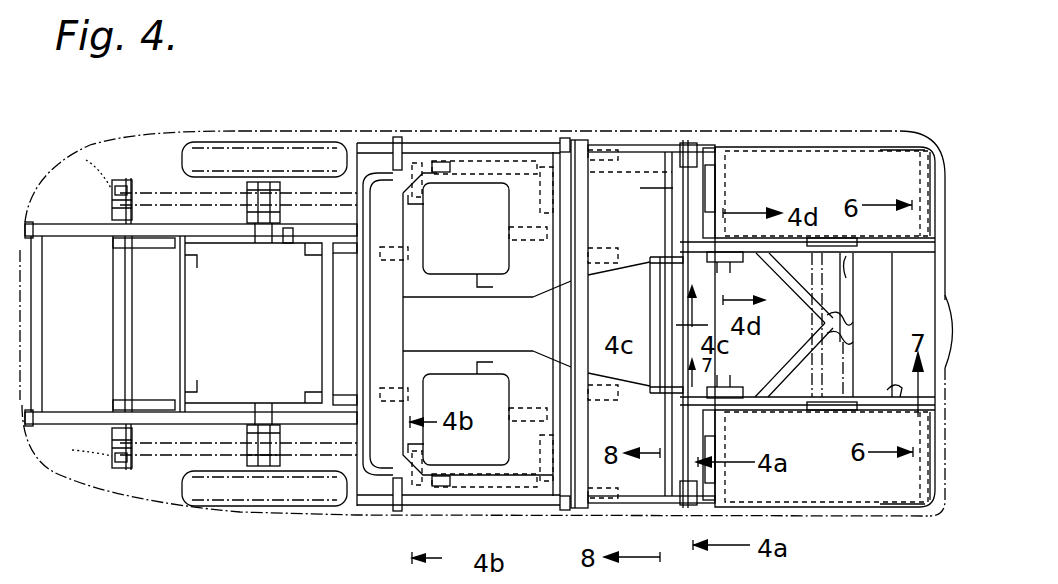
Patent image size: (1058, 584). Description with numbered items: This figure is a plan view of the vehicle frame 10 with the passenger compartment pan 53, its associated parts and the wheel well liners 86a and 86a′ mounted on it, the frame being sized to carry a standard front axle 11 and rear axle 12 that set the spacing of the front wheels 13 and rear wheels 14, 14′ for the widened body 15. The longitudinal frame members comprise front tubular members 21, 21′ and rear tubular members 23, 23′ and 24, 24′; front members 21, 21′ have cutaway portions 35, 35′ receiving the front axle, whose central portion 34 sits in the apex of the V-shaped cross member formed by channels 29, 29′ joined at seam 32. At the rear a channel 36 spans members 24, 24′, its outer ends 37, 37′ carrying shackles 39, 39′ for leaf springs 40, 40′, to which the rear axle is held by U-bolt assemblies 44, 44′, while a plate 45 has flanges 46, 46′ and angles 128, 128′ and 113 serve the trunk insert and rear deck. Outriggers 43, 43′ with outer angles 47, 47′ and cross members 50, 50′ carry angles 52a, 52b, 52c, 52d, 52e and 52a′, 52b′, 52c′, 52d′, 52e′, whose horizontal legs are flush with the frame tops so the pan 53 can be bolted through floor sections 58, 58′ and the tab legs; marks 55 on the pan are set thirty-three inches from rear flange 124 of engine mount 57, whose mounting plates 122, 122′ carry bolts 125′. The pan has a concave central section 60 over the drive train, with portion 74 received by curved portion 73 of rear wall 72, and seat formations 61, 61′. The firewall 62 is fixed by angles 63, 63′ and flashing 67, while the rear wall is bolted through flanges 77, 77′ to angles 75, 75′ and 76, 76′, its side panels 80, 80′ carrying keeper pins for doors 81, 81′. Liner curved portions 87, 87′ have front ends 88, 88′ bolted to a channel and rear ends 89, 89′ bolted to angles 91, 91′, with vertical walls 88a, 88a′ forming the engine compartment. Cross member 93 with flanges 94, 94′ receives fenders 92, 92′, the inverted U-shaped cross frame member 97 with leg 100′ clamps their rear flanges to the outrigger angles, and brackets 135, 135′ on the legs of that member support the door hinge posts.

The vehicle frame 10 is at (66, 205).
The front axle 11 is at (846, 272).
The rear axle 12 is at (247, 216).
The front wheels 13 is at (928, 507).
The rear wheel 14′ is at (200, 142).
The rear wheel 14 is at (200, 506).
The vehicle body 15 is at (257, 131).
The front frame tubular member 21′ is at (832, 238).
The front frame tubular member 21 is at (820, 410).
The rear frame tubular member 23′ is at (305, 255).
The rear frame tubular member 23 is at (305, 392).
The rear frame tubular member 24′ is at (255, 243).
The rear frame tubular member 24 is at (247, 415).
The channel 29′ is at (800, 292).
The channel 29 is at (790, 376).
The seam 32 is at (853, 322).
The central axle portion 34 is at (848, 358).
The cutaway portion 35′ is at (843, 238).
The cutaway portion 35 is at (835, 410).
The channel 36 is at (113, 302).
The outer end of channel 37′ is at (126, 185).
The outer end of channel 37 is at (126, 468).
The shackle 39′ is at (89, 159).
The shackle 39 is at (76, 448).
The leaf spring 40′ is at (148, 215).
The leaf spring 40 is at (165, 450).
The outrigger portion 43′ is at (360, 142).
The outrigger portion 43 is at (360, 506).
The U-bolt assembly 44′ is at (285, 243).
The U-bolt assembly 44 is at (270, 425).
The plate 45 is at (262, 336).
The flange 46′ is at (197, 262).
The flange 46 is at (197, 392).
The outer angle 47′ is at (430, 173).
The outer angle 47 is at (430, 475).
The outrigger cross frame member 50′ is at (690, 143).
The outrigger cross frame member 50 is at (690, 505).
The angle 52a′ is at (508, 240).
The angle 52a is at (508, 410).
The angle 52b′ is at (540, 192).
The angle 52b is at (540, 458).
The angle 52c′ is at (606, 248).
The angle 52c is at (606, 400).
The angle 52d′ is at (487, 161).
The angle 52d is at (512, 487).
The angle 52e′ is at (606, 150).
The angle 52e is at (606, 498).
The passenger compartment pan 53 is at (553, 266).
The marks 55 is at (553, 392).
The engine mount 57 is at (730, 380).
The floor section 58′ is at (345, 256).
The floor section 58 is at (345, 395).
The concave central section 60 is at (640, 325).
The box-like formation 61′ is at (478, 288).
The box-like formation 61 is at (476, 362).
The firewall 62 is at (660, 188).
The angle 63′ is at (685, 140).
The angle 63 is at (683, 434).
The flashing 67 is at (638, 270).
The rear wall 72 is at (350, 207).
The central curved portion 73 is at (393, 326).
The portion of concave section 74 is at (423, 280).
The angle 75′ is at (390, 247).
The angle 75 is at (390, 401).
The angle 76′ is at (440, 172).
The angle 76 is at (440, 476).
The flange 77′ is at (420, 220).
The flange 77 is at (420, 410).
The side panel 80′ is at (398, 137).
The side panel 80 is at (397, 511).
The door 81′ is at (485, 173).
The door 81 is at (485, 496).
The wheel well liner 86a′ is at (905, 150).
The wheel well liner 86a is at (905, 507).
The curved planar portion 87′ is at (765, 180).
The curved planar portion 87 is at (825, 507).
The front end of curved portion 88′ is at (930, 165).
The front end of curved portion 88 is at (930, 472).
The vertical wall 88a′ is at (920, 196).
The vertical wall 88a is at (780, 442).
The rear end of curved portion 89′ is at (712, 148).
The rear end of curved portion 89 is at (712, 500).
The angle 91′ is at (715, 187).
The angle 91 is at (715, 447).
The fender 92′ is at (822, 151).
The fender 92 is at (798, 502).
The metal pan or cross member 93 is at (892, 296).
The upstanding flange 94′ is at (898, 255).
The upstanding flange 94 is at (888, 386).
The inverted U-shaped cross frame member 97 is at (588, 317).
The leg of cross frame member 100′ is at (580, 140).
The angle 113 is at (37, 340).
The engine mounting plate 122′ is at (709, 289).
The engine mounting plate 122 is at (812, 338).
The rear flange of engine mount 124 is at (738, 387).
The bolts 125′ is at (751, 289).
The angle 128′ is at (152, 248).
The angle 128 is at (150, 400).
The bracket 135′ is at (564, 138).
The tab 135 is at (564, 510).